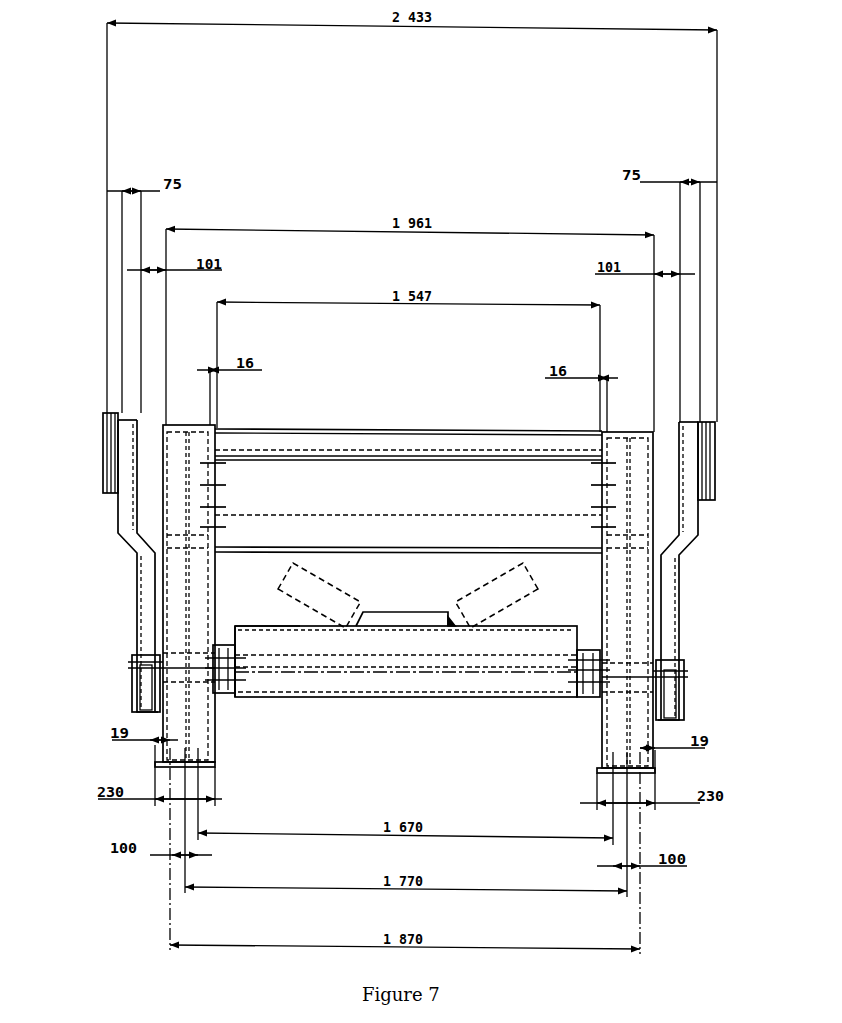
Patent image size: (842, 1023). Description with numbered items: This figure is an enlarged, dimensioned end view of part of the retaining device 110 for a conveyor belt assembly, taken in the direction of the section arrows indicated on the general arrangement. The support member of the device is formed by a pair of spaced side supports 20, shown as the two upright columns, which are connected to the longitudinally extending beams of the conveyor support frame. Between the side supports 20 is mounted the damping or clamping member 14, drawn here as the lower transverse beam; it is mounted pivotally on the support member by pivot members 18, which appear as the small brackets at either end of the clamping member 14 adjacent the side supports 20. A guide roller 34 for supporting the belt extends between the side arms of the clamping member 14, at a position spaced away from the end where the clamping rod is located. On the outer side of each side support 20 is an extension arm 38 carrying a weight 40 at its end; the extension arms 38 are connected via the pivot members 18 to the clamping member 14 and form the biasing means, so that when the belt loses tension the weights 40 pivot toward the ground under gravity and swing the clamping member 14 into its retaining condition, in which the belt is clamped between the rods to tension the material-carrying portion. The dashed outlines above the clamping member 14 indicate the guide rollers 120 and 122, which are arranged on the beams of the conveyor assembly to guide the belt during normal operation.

The damping member 14 is at (356, 702).
The pivot members 18 is at (132, 667).
The side supports 20 is at (163, 505).
The guide roller 34 is at (262, 626).
The extension arms 38 is at (137, 572).
The weights 40 is at (104, 449).
The retaining device 110 is at (405, 420).
The guide roller 120 is at (389, 611).
The guide roller 122 is at (480, 585).